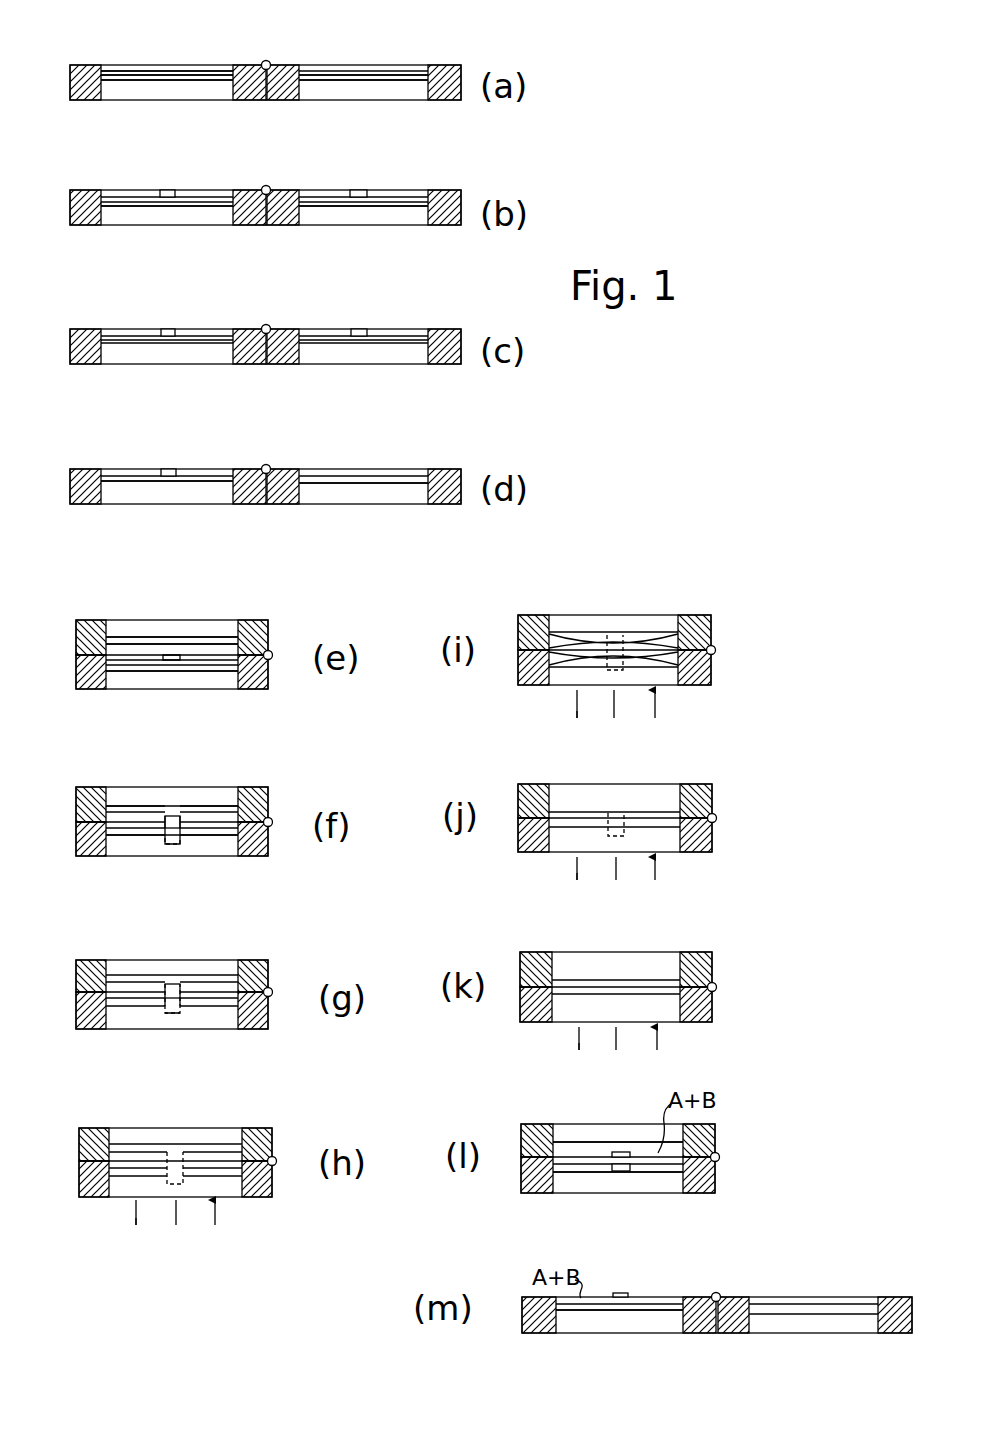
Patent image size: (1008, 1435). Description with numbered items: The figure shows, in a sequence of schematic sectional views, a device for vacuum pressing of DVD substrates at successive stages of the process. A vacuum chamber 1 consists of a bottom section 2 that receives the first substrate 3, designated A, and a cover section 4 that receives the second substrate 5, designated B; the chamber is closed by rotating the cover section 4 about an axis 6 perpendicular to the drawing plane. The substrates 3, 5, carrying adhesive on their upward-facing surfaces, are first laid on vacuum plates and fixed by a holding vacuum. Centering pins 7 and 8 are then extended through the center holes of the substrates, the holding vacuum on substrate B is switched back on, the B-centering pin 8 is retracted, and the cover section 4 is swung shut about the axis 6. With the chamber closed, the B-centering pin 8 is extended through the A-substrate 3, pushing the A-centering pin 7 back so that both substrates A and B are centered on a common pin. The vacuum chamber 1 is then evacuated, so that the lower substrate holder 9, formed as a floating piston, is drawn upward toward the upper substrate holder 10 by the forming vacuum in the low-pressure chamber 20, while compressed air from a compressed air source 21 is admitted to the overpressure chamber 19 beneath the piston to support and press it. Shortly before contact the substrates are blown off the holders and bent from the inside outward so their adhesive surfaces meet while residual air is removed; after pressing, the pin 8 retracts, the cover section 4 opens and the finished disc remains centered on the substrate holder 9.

The vacuum chamber 1 is at (229, 58).
The bottom section 2 is at (536, 1313).
The first (A) substrate 3 is at (153, 82).
The cover section 4 is at (546, 1133).
The second (B) substrate 5 is at (360, 82).
The axis 6 is at (718, 1157).
The A-centering pin 7 is at (622, 1292).
The B-centering pin 8 is at (168, 983).
The substrate holder 9 is at (658, 1300).
The upper substrate holder 10 is at (584, 1133).
The overpressure chamber 19 is at (397, 975).
The low-pressure chamber 20 is at (206, 1153).
The compressed air source 21 is at (357, 968).
The first substrate A is at (167, 54).
The second substrate B is at (363, 54).